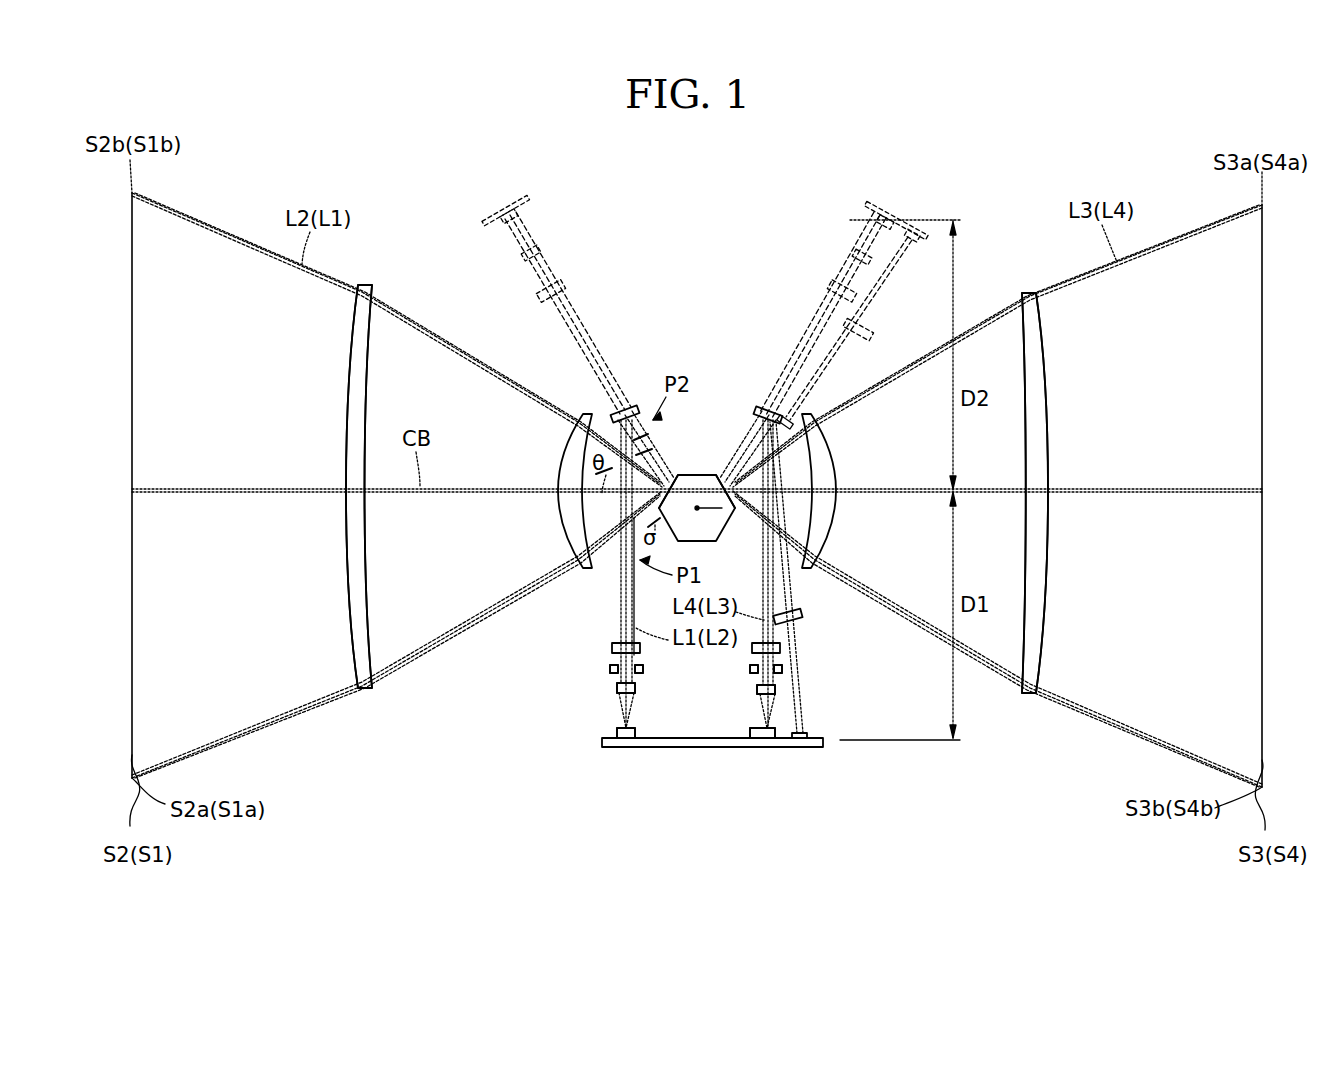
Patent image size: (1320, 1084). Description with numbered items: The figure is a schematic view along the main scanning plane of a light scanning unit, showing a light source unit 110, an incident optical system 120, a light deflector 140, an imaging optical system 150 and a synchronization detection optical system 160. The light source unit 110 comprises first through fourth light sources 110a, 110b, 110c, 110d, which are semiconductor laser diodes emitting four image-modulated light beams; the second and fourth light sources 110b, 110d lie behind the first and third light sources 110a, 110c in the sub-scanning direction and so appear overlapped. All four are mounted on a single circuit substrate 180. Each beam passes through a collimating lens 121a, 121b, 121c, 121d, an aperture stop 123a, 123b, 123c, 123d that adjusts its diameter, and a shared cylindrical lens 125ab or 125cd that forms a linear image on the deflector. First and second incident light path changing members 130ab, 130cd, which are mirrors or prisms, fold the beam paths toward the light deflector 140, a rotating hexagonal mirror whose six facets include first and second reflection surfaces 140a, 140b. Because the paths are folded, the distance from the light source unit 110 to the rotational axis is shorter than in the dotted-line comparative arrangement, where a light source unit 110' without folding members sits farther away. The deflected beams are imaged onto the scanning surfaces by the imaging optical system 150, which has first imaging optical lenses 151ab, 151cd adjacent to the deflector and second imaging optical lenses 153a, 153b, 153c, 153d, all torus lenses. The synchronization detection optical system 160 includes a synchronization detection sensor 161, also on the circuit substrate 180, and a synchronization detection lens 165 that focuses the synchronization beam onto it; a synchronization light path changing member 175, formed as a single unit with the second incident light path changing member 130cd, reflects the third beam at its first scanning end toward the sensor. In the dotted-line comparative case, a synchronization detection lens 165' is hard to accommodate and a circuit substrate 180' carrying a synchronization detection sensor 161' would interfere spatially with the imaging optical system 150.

The light source unit 110 is at (659, 800).
The first light source 110a is at (624, 740).
The second light source 110b is at (599, 766).
The third light source 110c is at (773, 779).
The fourth light source 110d is at (758, 748).
The light source unit 110' is at (851, 219).
The incident optical system 120 is at (701, 702).
The collimating lens 121a is at (616, 688).
The collimating lens 121b is at (572, 695).
The collimating lens 121c is at (849, 696).
The collimating lens 121d is at (777, 689).
The aperture stop 123a is at (609, 669).
The aperture stop 123b is at (576, 667).
The aperture stop 123c is at (845, 667).
The aperture stop 123d is at (783, 669).
The cylindrical lens 125ab is at (611, 648).
The cylindrical lens 125cd is at (781, 648).
The first incident light path changing member 130ab is at (627, 405).
The second incident light path changing member 130cd is at (765, 406).
The light deflector 140 is at (712, 545).
The first reflection surface 140a is at (672, 474).
The second reflection surface 140b is at (719, 473).
The imaging optical system 150 is at (705, 567).
The first imaging optical lens 151ab is at (562, 450).
The first imaging optical lens 151cd is at (830, 470).
The second imaging optical lens 153a is at (385, 517).
The second imaging optical lens 153b is at (365, 690).
The second imaging optical lens 153c is at (1027, 695).
The second imaging optical lens 153d is at (1062, 527).
The synchronization detection optical system 160 is at (850, 701).
The synchronization detection sensor 161 is at (835, 723).
The synchronization detection sensor 161' is at (921, 262).
The synchronization detection lens 165 is at (824, 615).
The synchronization detection lens 165' is at (877, 343).
The synchronization light path changing member 175 is at (782, 420).
The circuit substrate 180 is at (712, 764).
The circuit substrate 180' is at (869, 205).